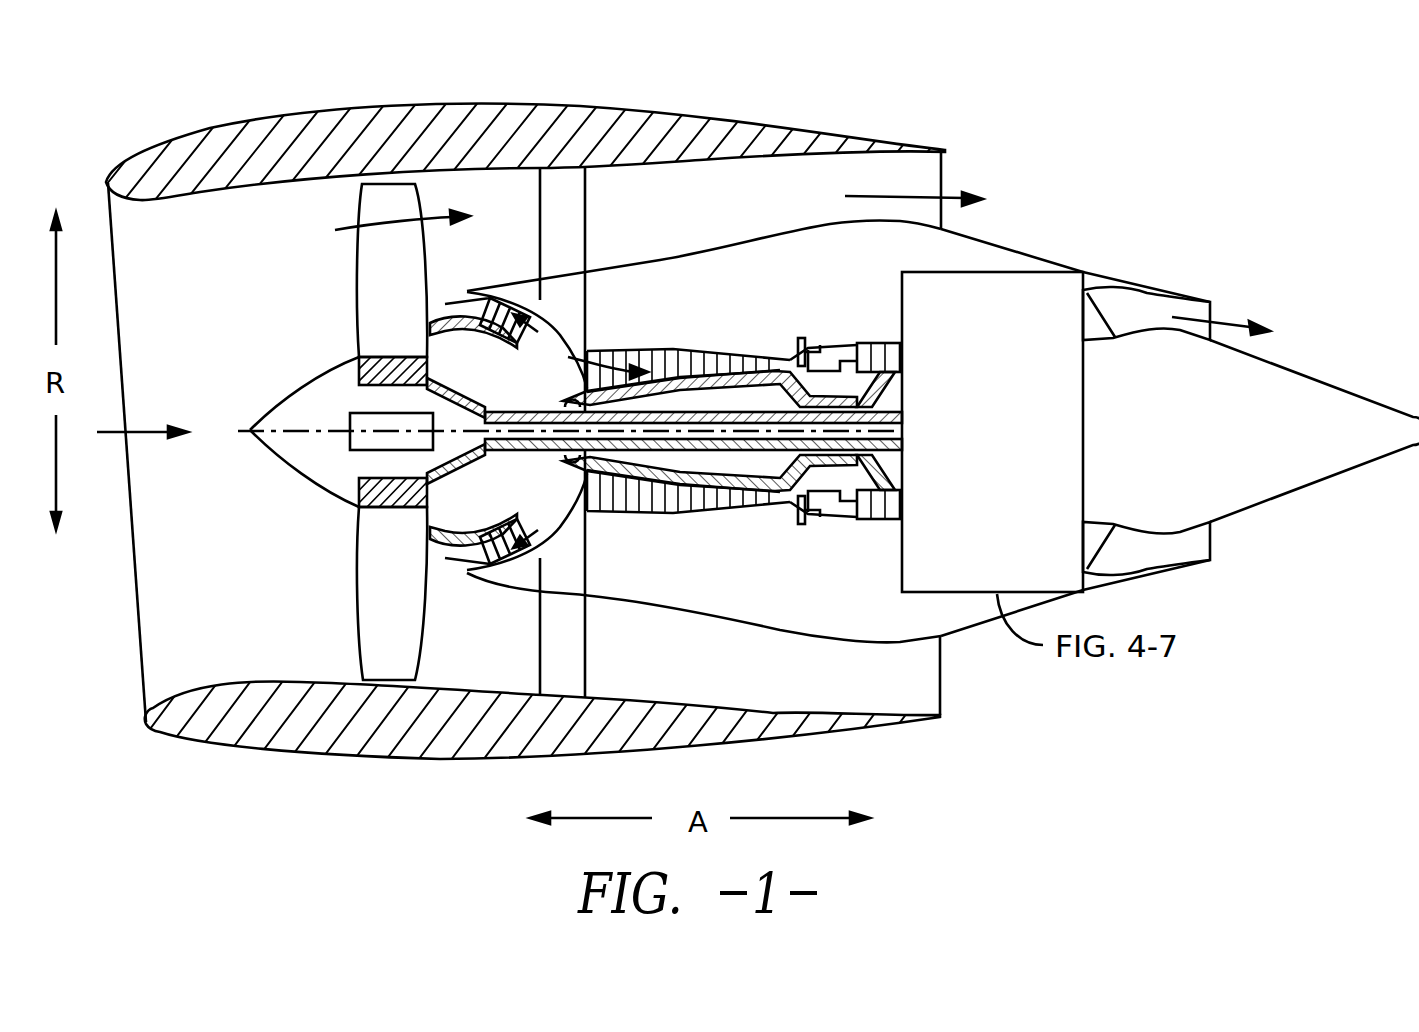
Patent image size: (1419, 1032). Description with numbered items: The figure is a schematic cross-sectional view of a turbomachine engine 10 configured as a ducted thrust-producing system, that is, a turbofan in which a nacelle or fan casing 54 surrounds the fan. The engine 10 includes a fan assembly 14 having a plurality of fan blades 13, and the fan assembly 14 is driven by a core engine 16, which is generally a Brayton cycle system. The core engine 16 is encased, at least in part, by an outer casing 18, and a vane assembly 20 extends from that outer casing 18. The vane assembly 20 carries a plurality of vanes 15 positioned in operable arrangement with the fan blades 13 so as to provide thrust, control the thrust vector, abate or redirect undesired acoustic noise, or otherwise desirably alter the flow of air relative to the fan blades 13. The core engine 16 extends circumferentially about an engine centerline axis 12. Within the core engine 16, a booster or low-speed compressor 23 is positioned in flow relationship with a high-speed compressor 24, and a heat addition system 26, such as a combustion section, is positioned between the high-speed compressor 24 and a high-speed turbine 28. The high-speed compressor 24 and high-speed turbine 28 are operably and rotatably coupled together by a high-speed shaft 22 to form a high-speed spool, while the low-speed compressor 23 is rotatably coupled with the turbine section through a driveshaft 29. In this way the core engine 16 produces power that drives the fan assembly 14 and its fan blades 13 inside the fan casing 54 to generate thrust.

The engine 10 is at (1158, 192).
The engine centerline axis 12 is at (1120, 432).
The fan blades 13 is at (356, 623).
The fan assembly 14 is at (442, 86).
The vanes 15 is at (585, 192).
The core engine 16 is at (792, 272).
The outer casing 18 is at (784, 628).
The vane assembly 20 is at (607, 616).
The high-speed shaft 22 is at (792, 355).
The low-speed compressor 23 is at (535, 527).
The high-speed compressor 24 is at (620, 522).
The heat addition system 26 is at (818, 520).
The high-speed turbine 28 is at (878, 334).
The driveshaft 29 is at (538, 410).
The nacelle or fan casing 54 is at (432, 764).